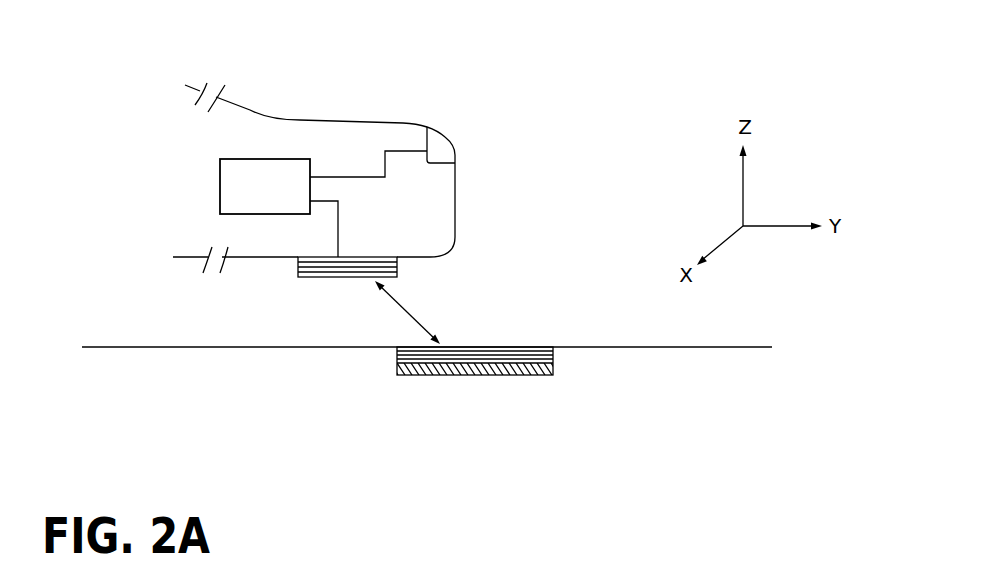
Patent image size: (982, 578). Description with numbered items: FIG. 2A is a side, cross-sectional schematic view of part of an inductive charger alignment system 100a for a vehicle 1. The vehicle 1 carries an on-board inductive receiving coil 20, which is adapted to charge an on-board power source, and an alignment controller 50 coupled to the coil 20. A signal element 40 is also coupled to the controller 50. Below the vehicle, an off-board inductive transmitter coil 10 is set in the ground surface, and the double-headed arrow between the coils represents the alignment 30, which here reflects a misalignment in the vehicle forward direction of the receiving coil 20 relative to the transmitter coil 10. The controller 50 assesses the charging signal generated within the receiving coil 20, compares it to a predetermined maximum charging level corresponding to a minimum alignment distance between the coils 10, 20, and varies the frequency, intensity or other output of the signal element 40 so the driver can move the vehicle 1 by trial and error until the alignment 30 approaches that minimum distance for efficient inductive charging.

The vehicle 1 is at (158, 162).
The off-board inductive transmitter coil 10 is at (540, 347).
The on-board inductive receiving coil 20 is at (398, 270).
The alignment 30 is at (408, 312).
The signal element 40 is at (438, 152).
The alignment controller 50 is at (277, 175).
The inductive charger alignment system 100a is at (658, 75).